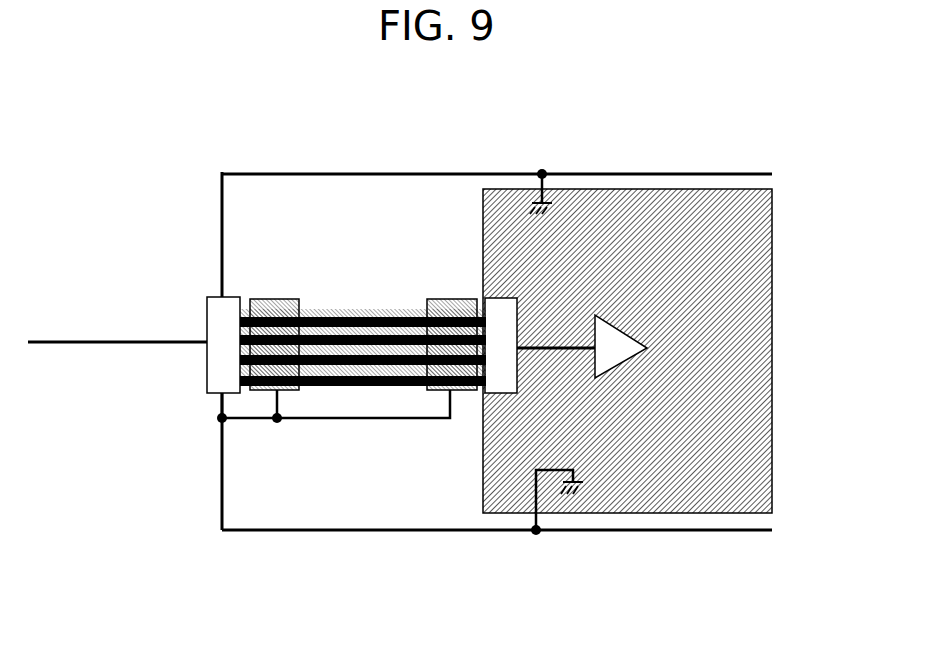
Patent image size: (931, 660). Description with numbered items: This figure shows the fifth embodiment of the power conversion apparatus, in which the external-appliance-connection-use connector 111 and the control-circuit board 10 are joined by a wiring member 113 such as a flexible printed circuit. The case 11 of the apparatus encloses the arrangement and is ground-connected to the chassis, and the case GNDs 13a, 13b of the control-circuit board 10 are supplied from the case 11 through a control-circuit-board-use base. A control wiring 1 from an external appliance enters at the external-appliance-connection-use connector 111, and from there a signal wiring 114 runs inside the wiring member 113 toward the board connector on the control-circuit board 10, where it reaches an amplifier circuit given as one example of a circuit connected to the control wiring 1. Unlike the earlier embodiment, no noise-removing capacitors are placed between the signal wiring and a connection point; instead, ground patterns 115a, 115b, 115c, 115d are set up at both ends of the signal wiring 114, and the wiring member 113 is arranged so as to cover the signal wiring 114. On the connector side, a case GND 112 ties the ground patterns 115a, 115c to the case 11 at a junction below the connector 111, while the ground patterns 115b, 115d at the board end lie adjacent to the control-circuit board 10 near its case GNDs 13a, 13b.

The control wiring 1 is at (77, 343).
The control-circuit board 10 is at (503, 202).
The case 11 is at (708, 532).
The case GND 13a is at (552, 210).
The case GND 13b is at (565, 470).
The external-appliance-connection-use connector 111 is at (222, 333).
The case GND 112 is at (215, 423).
The wiring member 113 is at (330, 305).
The signal wiring 114 is at (380, 320).
The ground pattern 115a is at (293, 394).
The ground pattern 115b is at (432, 394).
The ground pattern 115c is at (283, 385).
The ground pattern 115d is at (437, 385).